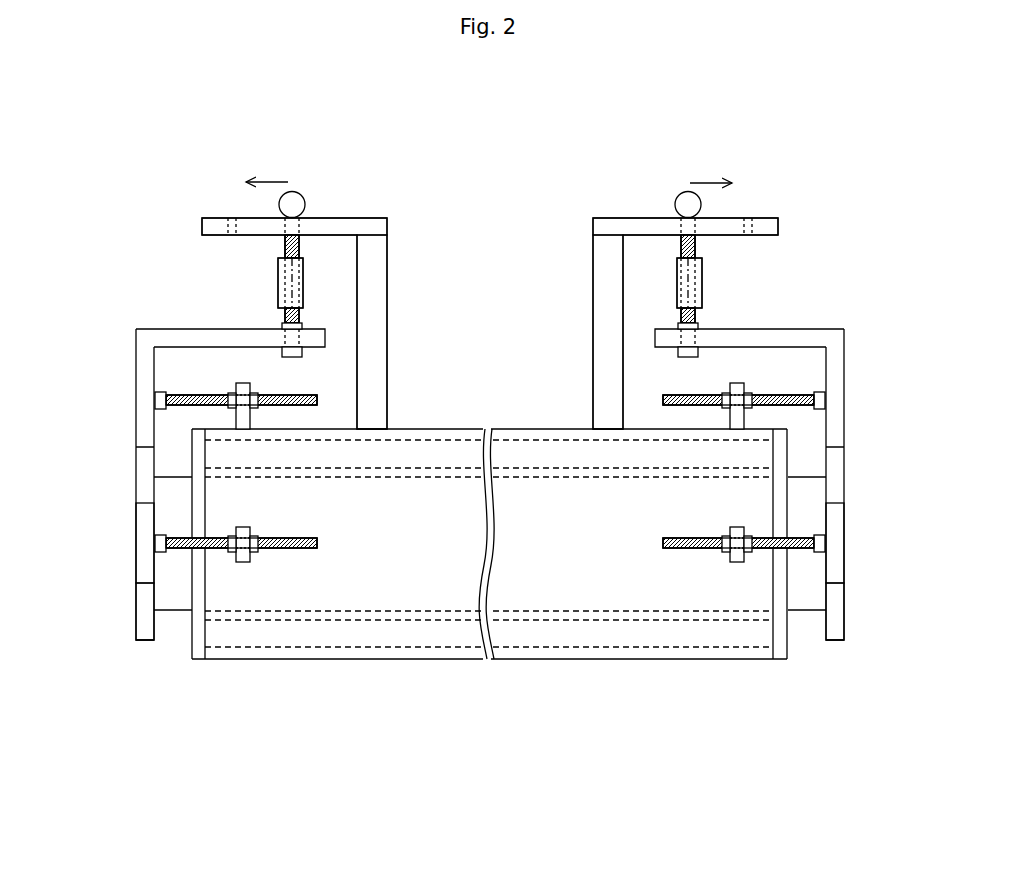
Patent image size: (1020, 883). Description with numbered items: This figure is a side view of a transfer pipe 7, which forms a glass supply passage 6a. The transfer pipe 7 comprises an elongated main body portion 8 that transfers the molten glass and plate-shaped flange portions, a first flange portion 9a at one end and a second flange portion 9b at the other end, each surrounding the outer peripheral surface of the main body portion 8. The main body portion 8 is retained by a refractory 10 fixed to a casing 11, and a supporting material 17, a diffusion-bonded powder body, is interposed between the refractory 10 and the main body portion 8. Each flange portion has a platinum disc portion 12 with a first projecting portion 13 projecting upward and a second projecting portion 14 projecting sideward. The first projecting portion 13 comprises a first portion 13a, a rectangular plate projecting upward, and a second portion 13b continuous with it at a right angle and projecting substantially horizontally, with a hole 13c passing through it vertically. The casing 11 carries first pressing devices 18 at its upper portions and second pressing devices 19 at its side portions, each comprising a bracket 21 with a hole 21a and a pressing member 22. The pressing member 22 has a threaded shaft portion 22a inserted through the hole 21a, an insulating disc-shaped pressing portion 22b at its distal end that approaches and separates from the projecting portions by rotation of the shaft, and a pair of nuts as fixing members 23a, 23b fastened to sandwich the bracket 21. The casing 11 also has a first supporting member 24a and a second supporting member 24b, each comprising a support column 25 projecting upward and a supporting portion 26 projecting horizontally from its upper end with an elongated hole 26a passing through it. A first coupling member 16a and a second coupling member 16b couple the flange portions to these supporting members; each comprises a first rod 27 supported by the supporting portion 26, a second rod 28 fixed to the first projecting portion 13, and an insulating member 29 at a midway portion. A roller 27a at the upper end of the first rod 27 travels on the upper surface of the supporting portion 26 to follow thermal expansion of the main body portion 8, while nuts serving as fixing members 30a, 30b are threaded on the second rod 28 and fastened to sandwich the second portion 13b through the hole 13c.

The glass supply passage 6a is at (501, 160).
The transfer pipe 7 is at (177, 633).
The main body portion 8 is at (379, 575).
The first flange portion 9a is at (836, 647).
The second flange portion 9b is at (143, 647).
The refractory 10 is at (432, 458).
The casing 11 is at (448, 660).
The disc portion 12 is at (136, 607).
The first projecting portion 13 is at (489, 466).
The first portion 13a is at (136, 380).
The second portion 13b is at (195, 329).
The hole 13c is at (290, 351).
The second projecting portion 14 is at (136, 547).
The first coupling member 16a is at (753, 240).
The second coupling member 16b is at (227, 240).
The supporting material 17 is at (546, 470).
The first pressing device 18 is at (332, 400).
The second pressing device 19 is at (257, 521).
The bracket 21 is at (243, 422).
The hole 21a is at (258, 386).
The pressing member 22 is at (489, 571).
The shaft portion 22a is at (190, 406).
The pressing portion 22b is at (157, 407).
The fixing member 23a is at (257, 407).
The fixing member 23b is at (230, 392).
The first supporting member 24a is at (543, 183).
The second supporting member 24b is at (437, 183).
The support column 25 is at (388, 252).
The supporting portion 26 is at (332, 218).
The elongated hole 26a is at (233, 222).
The first rod 27 is at (285, 246).
The roller 27a is at (298, 192).
The second rod 28 is at (285, 313).
The insulating member 29 is at (278, 284).
The fixing member 30a is at (303, 326).
The fixing member 30b is at (303, 352).